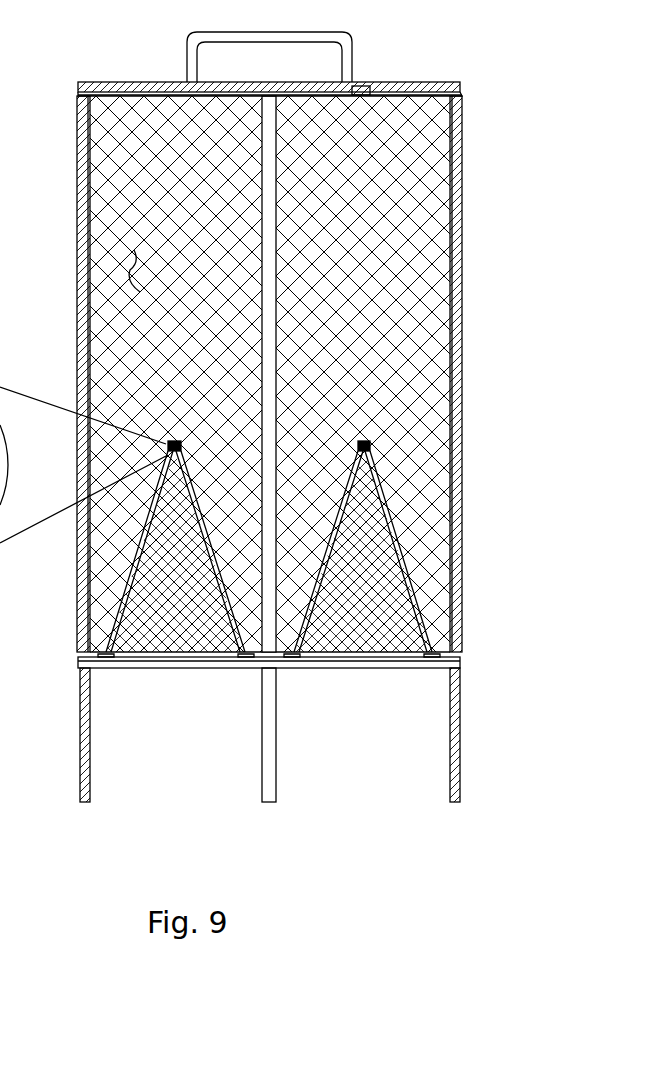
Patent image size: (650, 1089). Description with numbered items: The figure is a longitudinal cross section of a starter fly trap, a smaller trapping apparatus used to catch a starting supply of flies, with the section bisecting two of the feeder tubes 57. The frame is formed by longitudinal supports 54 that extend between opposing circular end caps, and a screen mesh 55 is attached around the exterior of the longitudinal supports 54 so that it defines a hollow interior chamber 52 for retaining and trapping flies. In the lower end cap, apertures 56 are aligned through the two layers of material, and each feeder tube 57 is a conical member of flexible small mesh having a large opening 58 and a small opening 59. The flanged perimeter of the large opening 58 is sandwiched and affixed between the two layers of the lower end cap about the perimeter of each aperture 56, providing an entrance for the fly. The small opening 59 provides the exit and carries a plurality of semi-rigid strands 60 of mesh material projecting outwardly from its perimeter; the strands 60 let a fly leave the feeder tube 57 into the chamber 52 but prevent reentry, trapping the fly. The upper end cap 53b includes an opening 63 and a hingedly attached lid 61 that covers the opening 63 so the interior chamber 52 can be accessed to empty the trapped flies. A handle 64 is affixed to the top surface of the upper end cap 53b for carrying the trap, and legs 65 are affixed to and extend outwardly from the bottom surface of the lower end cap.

The interior chamber 52 is at (135, 263).
The upper end cap 53b is at (462, 84).
The longitudinal supports 54 is at (455, 540).
The screen mesh 55 is at (400, 238).
The apertures 56 is at (200, 668).
The feeder tubes 57 is at (410, 584).
The large opening 58 is at (143, 657).
The small opening 59 is at (166, 451).
The semi-rigid strands 60 is at (166, 447).
The lid 61 is at (358, 85).
The opening 63 is at (207, 88).
The handle 64 is at (194, 40).
The legs 65 is at (456, 731).